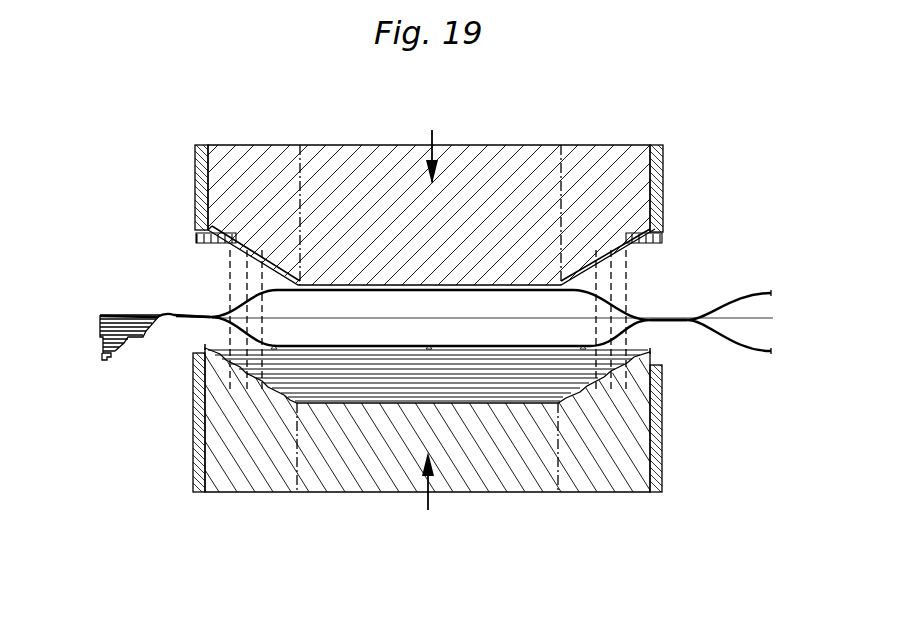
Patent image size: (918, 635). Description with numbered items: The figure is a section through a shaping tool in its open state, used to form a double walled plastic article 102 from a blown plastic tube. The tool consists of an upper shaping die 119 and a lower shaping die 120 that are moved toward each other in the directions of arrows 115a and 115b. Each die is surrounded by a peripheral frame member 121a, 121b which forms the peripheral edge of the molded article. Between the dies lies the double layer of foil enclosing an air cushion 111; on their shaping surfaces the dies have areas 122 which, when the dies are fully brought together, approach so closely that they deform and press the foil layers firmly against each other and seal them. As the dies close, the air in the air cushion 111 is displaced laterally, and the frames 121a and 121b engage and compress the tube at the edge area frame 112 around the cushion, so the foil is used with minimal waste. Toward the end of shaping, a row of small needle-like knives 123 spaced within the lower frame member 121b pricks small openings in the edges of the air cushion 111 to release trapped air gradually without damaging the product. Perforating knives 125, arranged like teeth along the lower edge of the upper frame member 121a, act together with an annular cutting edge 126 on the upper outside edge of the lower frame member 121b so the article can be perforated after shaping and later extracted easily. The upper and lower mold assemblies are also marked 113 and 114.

The double walled plastic article 102 is at (118, 348).
The air cushion 111 is at (356, 315).
The edge area frame 112 is at (206, 315).
The upper mold 113 is at (432, 193).
The lower mold 114 is at (440, 446).
The arrow 115a is at (432, 130).
The arrow 115b is at (428, 510).
The shaping die 119 is at (497, 165).
The shaping die 120 is at (528, 478).
The peripheral frame member 121a is at (661, 150).
The peripheral frame member 121b is at (658, 446).
The areas 122 is at (264, 264).
The needle-like knives 123 is at (206, 346).
The perforating knives 125 is at (196, 234).
The annular cutting edge 126 is at (197, 356).